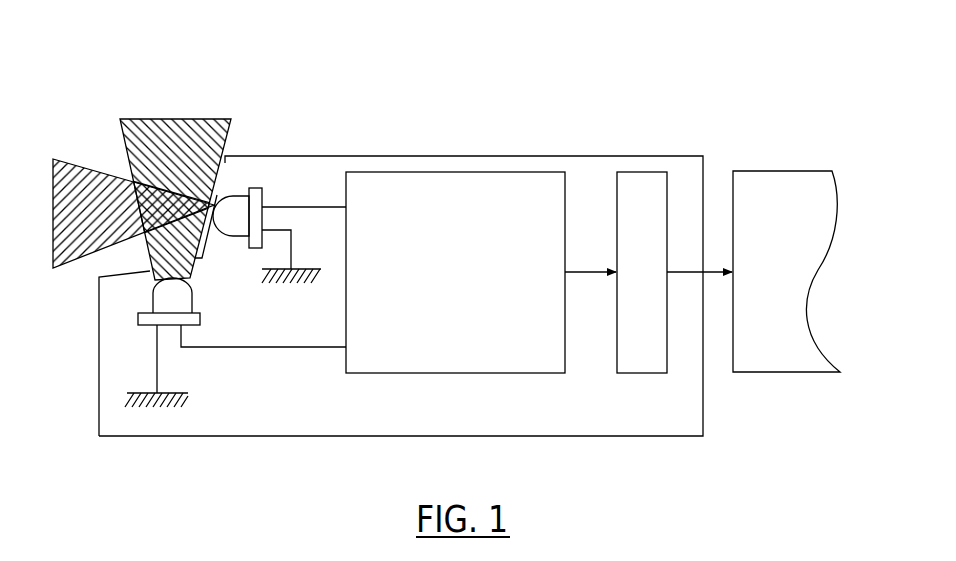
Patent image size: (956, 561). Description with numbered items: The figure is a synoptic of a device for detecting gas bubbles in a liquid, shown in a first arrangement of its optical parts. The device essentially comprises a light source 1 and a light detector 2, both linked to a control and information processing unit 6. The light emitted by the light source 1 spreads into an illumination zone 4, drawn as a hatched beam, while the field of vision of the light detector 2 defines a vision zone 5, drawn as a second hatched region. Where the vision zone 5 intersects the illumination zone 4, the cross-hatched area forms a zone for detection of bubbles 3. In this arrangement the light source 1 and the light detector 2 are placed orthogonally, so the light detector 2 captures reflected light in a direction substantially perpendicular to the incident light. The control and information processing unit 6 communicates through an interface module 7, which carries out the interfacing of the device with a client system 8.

The light source 1 is at (142, 300).
The light detector 2 is at (242, 188).
The zone for detection of bubbles 3 is at (152, 200).
The illumination zone 4 is at (182, 112).
The vision zone 5 is at (93, 197).
The control and information processing unit 6 is at (450, 193).
The interface module 7 is at (638, 193).
The client system 8 is at (792, 210).